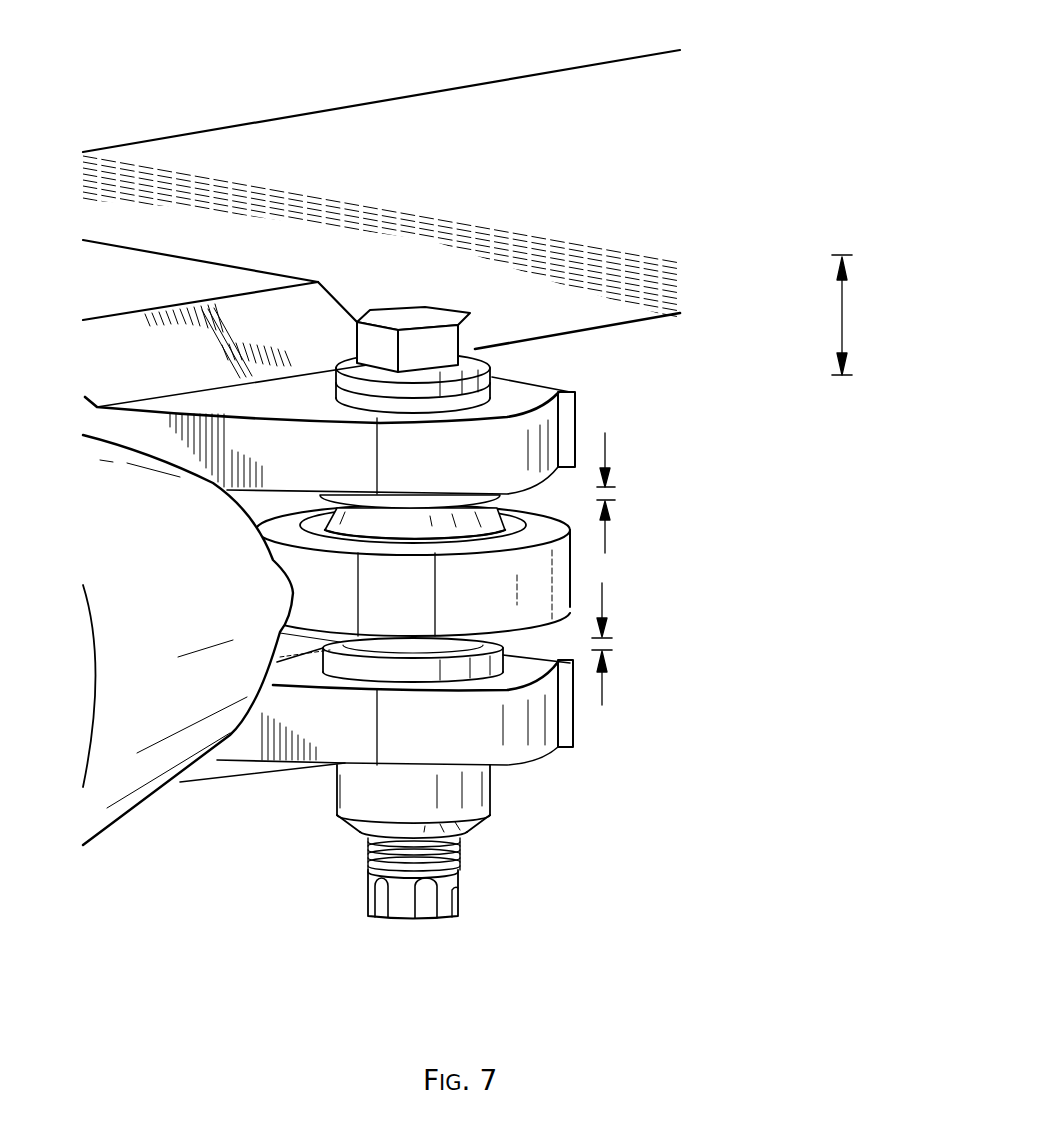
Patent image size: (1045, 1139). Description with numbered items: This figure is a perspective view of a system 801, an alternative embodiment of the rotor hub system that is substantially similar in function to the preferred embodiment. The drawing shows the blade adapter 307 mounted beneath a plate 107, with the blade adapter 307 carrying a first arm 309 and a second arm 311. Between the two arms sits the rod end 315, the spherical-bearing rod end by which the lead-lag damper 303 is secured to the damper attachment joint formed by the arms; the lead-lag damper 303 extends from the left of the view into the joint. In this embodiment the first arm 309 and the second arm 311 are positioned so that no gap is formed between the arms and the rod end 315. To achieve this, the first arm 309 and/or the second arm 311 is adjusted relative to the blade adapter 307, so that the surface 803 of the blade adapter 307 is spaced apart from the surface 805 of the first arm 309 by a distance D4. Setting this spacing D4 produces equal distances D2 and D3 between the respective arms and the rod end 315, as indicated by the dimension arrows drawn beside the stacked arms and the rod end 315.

The plate 107 is at (343, 107).
The system 801 is at (484, 460).
The surface 803 is at (381, 499).
The blade adapter 307 is at (250, 267).
The surface 805 is at (515, 391).
The first arm 309 is at (577, 395).
The rod end 315 is at (575, 567).
The second arm 311 is at (580, 757).
The lead-lag damper 303 is at (127, 823).
The distance D2 is at (605, 453).
The distance D3 is at (602, 683).
The distance D4 is at (842, 323).